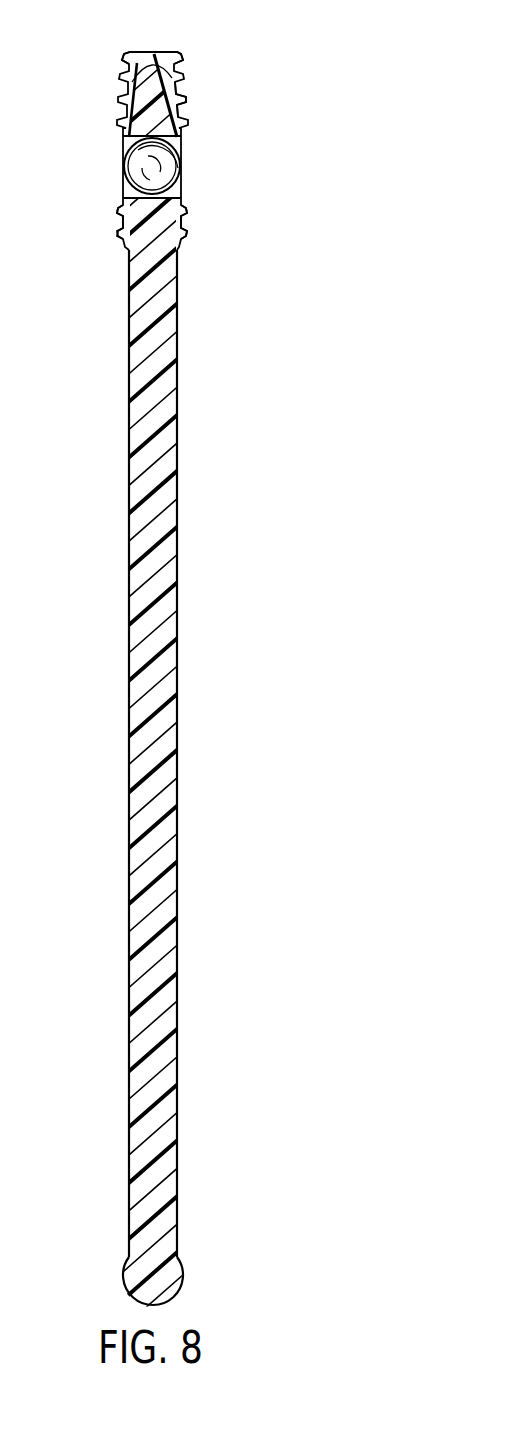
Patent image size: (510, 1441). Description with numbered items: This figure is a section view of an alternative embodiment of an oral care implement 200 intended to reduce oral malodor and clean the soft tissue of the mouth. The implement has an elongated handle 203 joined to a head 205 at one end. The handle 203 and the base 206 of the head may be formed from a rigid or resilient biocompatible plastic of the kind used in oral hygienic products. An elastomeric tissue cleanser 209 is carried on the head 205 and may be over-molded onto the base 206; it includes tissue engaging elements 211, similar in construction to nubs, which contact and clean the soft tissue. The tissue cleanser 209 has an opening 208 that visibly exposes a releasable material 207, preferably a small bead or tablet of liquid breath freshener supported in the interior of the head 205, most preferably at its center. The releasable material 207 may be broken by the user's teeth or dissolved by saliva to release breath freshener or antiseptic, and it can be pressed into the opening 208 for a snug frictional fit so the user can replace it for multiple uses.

The oral care implement 200 is at (322, 40).
The handle 203 is at (176, 778).
The head 205 is at (116, 83).
The base 206 is at (180, 102).
The releasable material 207 is at (160, 167).
The opening 208 is at (181, 139).
The tissue cleanser 209 is at (156, 53).
The tissue engaging elements 211 is at (123, 212).